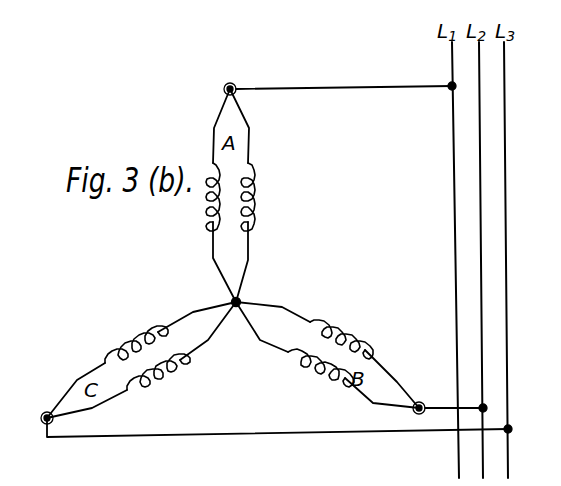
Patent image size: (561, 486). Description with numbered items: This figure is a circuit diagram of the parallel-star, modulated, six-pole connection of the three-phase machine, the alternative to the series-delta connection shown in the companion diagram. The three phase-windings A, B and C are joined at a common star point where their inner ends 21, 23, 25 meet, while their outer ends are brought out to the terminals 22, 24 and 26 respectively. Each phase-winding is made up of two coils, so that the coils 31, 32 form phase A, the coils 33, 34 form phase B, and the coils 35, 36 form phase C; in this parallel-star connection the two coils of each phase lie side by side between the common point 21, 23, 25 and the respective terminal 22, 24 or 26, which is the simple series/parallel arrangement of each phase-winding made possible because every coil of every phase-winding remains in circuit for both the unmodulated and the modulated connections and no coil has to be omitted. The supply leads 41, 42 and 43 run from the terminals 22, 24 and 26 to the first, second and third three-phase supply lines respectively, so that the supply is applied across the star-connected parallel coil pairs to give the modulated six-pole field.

The common neutral junction of phase windings 21 is at (301, 284).
The phase A terminal 22 is at (231, 83).
The common neutral junction of phase windings 23 is at (301, 284).
The phase B terminal 24 is at (423, 403).
The common neutral junction of phase windings 25 is at (239, 300).
The phase C terminal 26 is at (46, 412).
The phase A winding coil 31 is at (256, 203).
The phase A winding coil 32 is at (206, 224).
The phase B winding coil 33 is at (314, 368).
The phase B winding coil 34 is at (352, 339).
The phase C winding coil 35 is at (133, 338).
The phase C winding coil 36 is at (148, 388).
The supply lead 41 is at (377, 86).
The supply lead 42 is at (447, 409).
The supply lead 43 is at (251, 435).